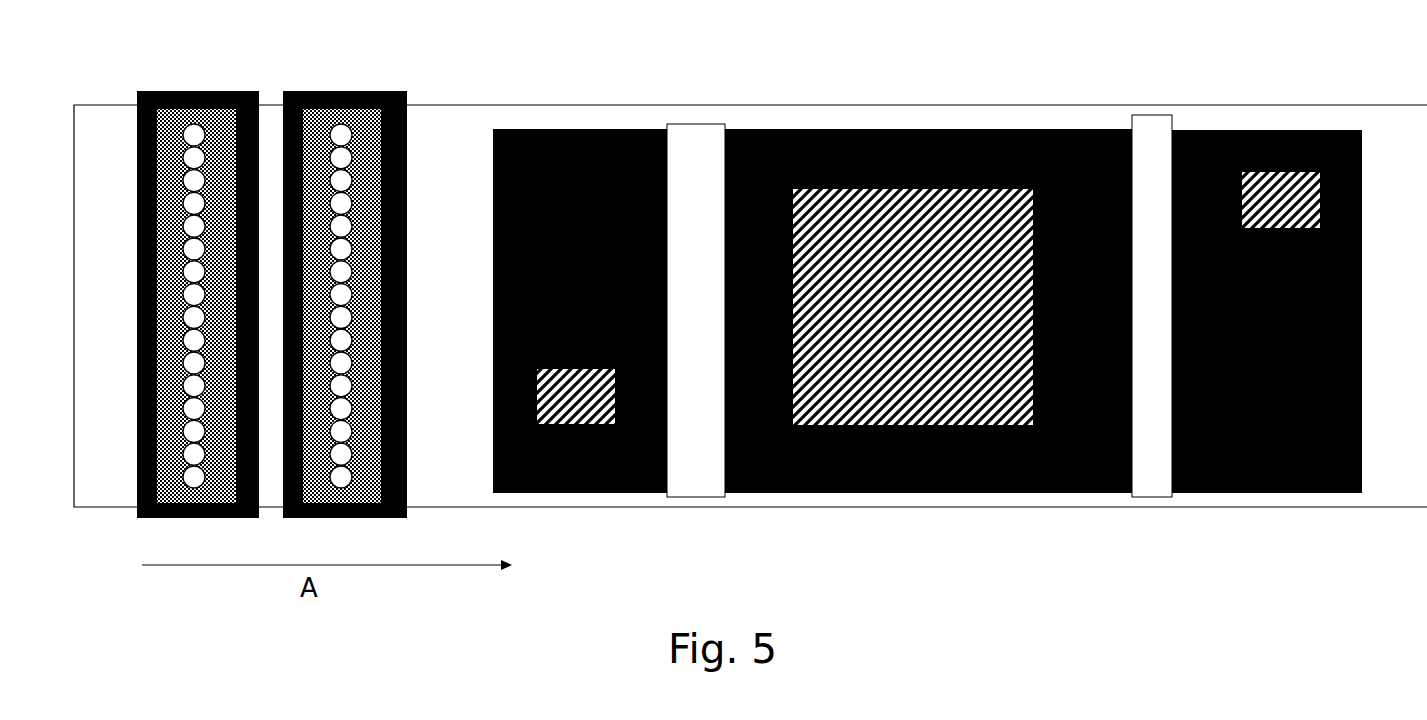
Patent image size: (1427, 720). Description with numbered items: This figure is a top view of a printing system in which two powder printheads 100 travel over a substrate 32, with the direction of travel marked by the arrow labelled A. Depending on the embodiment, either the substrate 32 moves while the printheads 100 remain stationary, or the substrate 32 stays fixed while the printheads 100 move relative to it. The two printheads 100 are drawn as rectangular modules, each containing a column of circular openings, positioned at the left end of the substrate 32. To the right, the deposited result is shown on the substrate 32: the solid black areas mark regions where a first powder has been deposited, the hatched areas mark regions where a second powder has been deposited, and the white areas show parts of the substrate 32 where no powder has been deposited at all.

The powder printhead 100 is at (197, 83).
The substrate 32 is at (1408, 447).